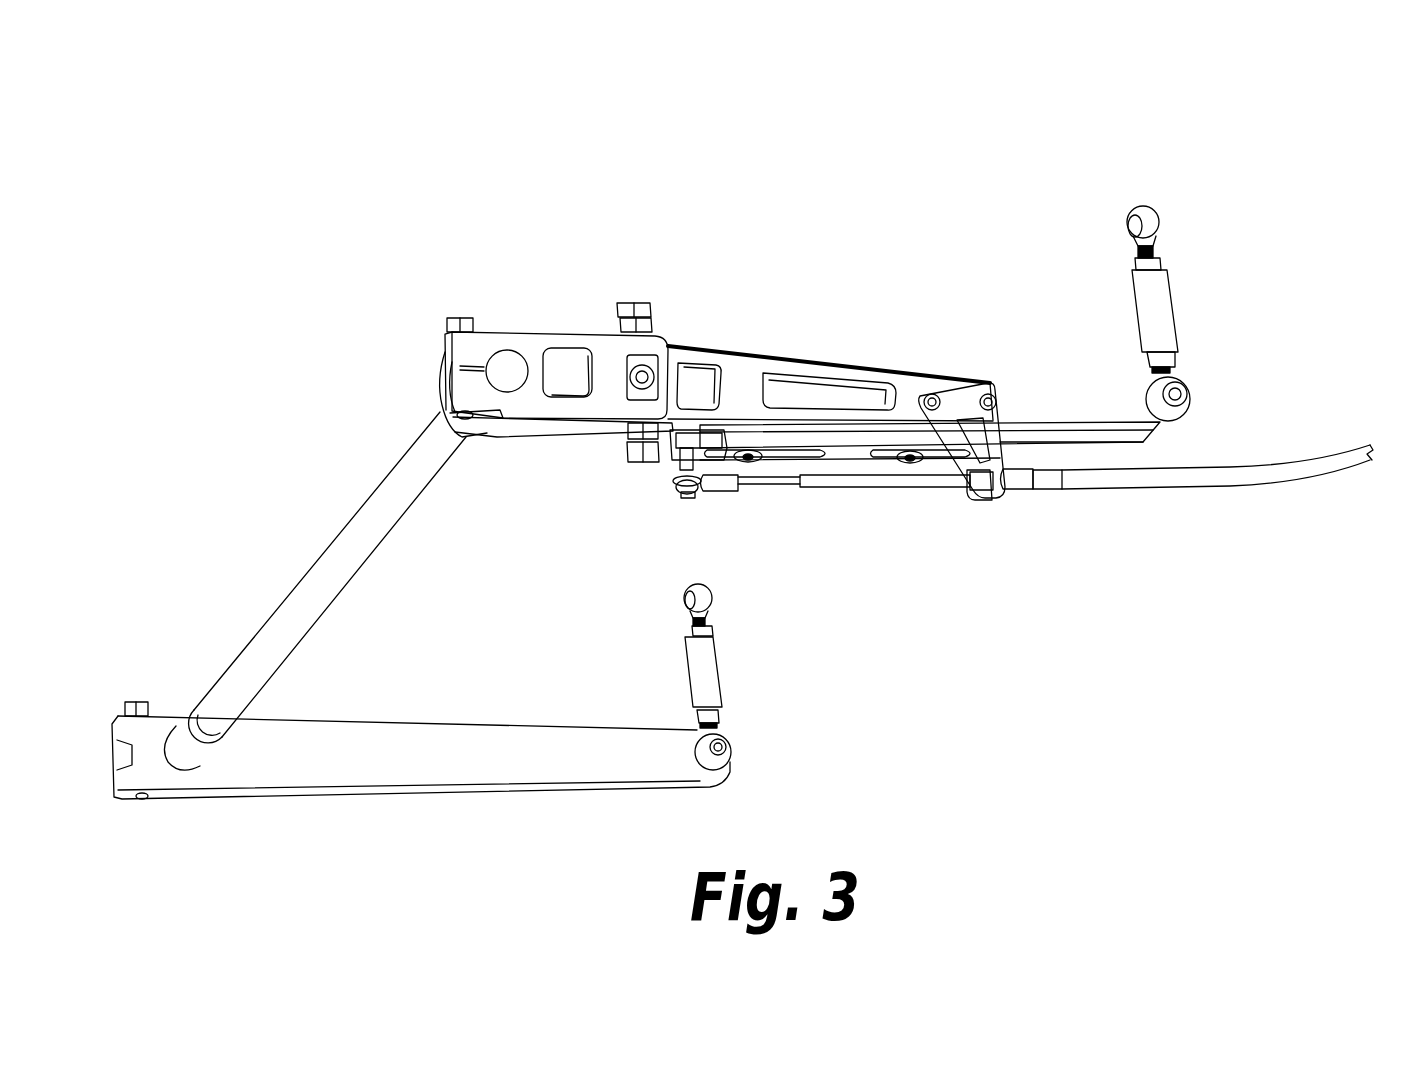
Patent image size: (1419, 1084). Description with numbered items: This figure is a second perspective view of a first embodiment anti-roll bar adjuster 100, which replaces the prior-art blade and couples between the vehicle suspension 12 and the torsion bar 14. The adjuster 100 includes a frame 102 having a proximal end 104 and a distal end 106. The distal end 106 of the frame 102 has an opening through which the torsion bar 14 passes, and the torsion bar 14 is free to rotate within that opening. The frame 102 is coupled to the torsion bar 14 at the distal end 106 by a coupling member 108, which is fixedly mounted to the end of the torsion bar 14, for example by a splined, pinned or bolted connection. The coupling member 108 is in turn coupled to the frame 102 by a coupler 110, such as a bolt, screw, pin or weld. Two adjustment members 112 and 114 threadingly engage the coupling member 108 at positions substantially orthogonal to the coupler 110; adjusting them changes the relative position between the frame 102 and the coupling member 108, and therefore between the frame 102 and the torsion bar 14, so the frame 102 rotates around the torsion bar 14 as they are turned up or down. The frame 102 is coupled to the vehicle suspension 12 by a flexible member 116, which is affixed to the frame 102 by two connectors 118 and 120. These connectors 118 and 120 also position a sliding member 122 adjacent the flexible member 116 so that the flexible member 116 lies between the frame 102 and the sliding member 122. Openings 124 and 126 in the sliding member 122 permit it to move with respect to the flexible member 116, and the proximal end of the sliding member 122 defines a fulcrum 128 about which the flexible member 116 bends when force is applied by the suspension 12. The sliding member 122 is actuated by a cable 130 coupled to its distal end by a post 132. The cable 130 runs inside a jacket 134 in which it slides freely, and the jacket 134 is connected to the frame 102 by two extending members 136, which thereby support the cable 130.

The anti-roll bar adjuster 100 is at (918, 164).
The frame 102 is at (810, 360).
The proximal end 104 is at (993, 348).
The distal end 106 is at (420, 353).
The coupling member 108 is at (535, 323).
The coupler 110 is at (627, 397).
The adjustment member 112 is at (622, 303).
The adjustment member 114 is at (633, 463).
The flexible member 116 is at (1058, 420).
The connector 118 is at (745, 500).
The connector 120 is at (920, 463).
The sliding member 122 is at (853, 450).
The opening 124 is at (770, 453).
The opening 126 is at (890, 460).
The fulcrum 128 is at (1020, 431).
The cable 130 is at (787, 487).
The post 132 is at (687, 497).
The jacket 134 is at (1153, 488).
The extending member 136 is at (1015, 478).
The vehicle suspension 12 is at (1173, 307).
The torsion bar 14 is at (330, 545).